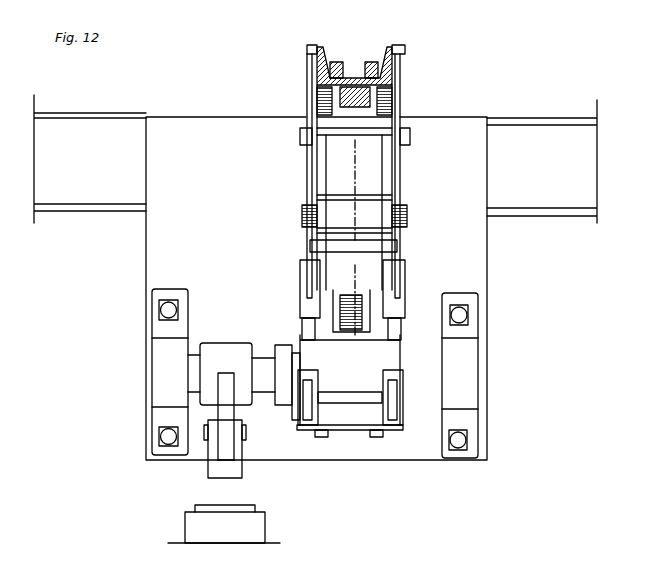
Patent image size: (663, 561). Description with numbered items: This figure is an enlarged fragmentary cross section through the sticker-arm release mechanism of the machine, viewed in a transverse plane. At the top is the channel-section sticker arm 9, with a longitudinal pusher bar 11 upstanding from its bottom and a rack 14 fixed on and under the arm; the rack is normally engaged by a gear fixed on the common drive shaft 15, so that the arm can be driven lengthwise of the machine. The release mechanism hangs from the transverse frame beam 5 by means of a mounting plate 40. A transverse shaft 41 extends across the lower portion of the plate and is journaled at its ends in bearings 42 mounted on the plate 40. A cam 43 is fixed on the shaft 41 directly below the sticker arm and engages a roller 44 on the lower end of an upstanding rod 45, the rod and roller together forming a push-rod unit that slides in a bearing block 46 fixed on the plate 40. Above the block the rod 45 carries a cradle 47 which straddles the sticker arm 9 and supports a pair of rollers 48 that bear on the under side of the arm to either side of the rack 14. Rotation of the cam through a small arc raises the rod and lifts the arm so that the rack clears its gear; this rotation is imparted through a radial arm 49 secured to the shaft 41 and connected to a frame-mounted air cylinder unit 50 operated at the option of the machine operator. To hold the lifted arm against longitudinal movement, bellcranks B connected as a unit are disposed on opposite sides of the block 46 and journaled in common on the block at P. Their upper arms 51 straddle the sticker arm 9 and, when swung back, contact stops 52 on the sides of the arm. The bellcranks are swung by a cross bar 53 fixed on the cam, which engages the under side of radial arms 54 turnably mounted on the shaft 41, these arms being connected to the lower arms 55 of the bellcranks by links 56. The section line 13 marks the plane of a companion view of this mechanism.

The transverse beam 5 is at (73, 202).
The sticker arm 9 is at (398, 62).
The pusher bar 11 is at (368, 62).
The section line 13 is at (433, 510).
The rack 14 is at (312, 72).
The shaft 15 is at (392, 10).
The mounting plate 40 is at (166, 225).
The transverse shaft 41 is at (205, 376).
The bearings 42 is at (155, 352).
The cam 43 is at (318, 360).
The roller 44 is at (352, 331).
The rod 45 is at (345, 122).
The bearing block 46 is at (372, 170).
The cradle 47 is at (330, 122).
The rollers 48 is at (322, 92).
The radial arm 49 is at (226, 437).
The air cylinder unit 50 is at (182, 511).
The upper arms 51 is at (302, 136).
The stops 52 is at (310, 48).
The cross bar 53 is at (350, 429).
The radial arms 54 is at (300, 426).
The lower arms 55 is at (307, 270).
The links 56 is at (305, 325).
The bellcranks B is at (304, 192).
The pivot P is at (406, 218).